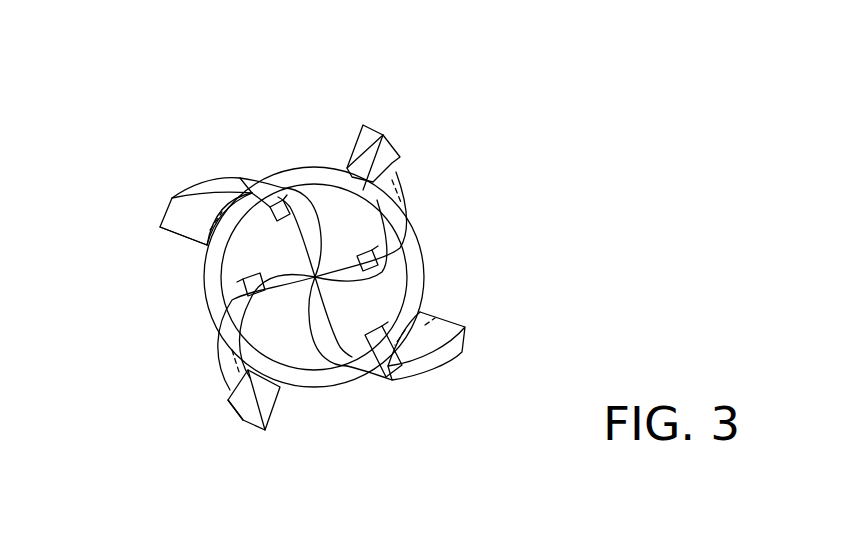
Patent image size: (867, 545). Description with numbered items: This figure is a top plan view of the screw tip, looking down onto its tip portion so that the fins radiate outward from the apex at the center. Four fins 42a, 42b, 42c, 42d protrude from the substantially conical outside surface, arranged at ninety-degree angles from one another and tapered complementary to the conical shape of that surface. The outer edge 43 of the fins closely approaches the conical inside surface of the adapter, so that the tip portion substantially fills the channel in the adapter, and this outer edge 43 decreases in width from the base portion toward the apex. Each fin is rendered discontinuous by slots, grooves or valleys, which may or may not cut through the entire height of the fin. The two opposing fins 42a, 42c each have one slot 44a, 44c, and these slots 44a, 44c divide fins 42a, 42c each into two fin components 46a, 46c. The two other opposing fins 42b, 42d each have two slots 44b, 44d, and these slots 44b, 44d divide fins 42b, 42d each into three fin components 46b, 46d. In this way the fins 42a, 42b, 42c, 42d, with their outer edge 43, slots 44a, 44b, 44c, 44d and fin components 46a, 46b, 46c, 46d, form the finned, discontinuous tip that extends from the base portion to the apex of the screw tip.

The outer edge 43 is at (177, 205).
The fin 42a is at (176, 246).
The fin 42b is at (350, 137).
The fin 42c is at (446, 309).
The fin 42d is at (283, 404).
The slot 44a is at (228, 183).
The slots 44b is at (398, 150).
The slot 44c is at (392, 376).
The slots 44d is at (228, 300).
The fin components 46a is at (302, 190).
The fin components 46b is at (388, 140).
The fin components 46c is at (360, 380).
The fin components 46d is at (245, 277).